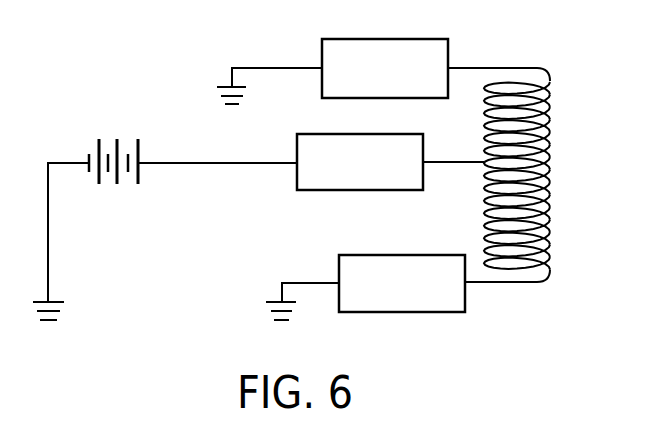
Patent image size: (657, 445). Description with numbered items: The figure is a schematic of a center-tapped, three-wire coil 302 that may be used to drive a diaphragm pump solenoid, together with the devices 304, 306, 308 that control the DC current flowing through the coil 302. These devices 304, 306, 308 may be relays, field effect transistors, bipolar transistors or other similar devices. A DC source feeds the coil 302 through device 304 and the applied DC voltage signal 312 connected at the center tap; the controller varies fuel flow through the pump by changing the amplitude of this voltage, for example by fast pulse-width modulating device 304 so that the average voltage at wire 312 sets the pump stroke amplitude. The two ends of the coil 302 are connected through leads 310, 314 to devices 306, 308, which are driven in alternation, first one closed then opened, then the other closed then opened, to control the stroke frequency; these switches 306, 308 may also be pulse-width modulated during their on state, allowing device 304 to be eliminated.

The three-wire coil 302 is at (550, 130).
The device 304 is at (339, 177).
The device 306 is at (364, 84).
The device 308 is at (380, 298).
The first lead 310 is at (470, 65).
The applied DC voltage signal 312 is at (442, 163).
The third lead 314 is at (482, 283).